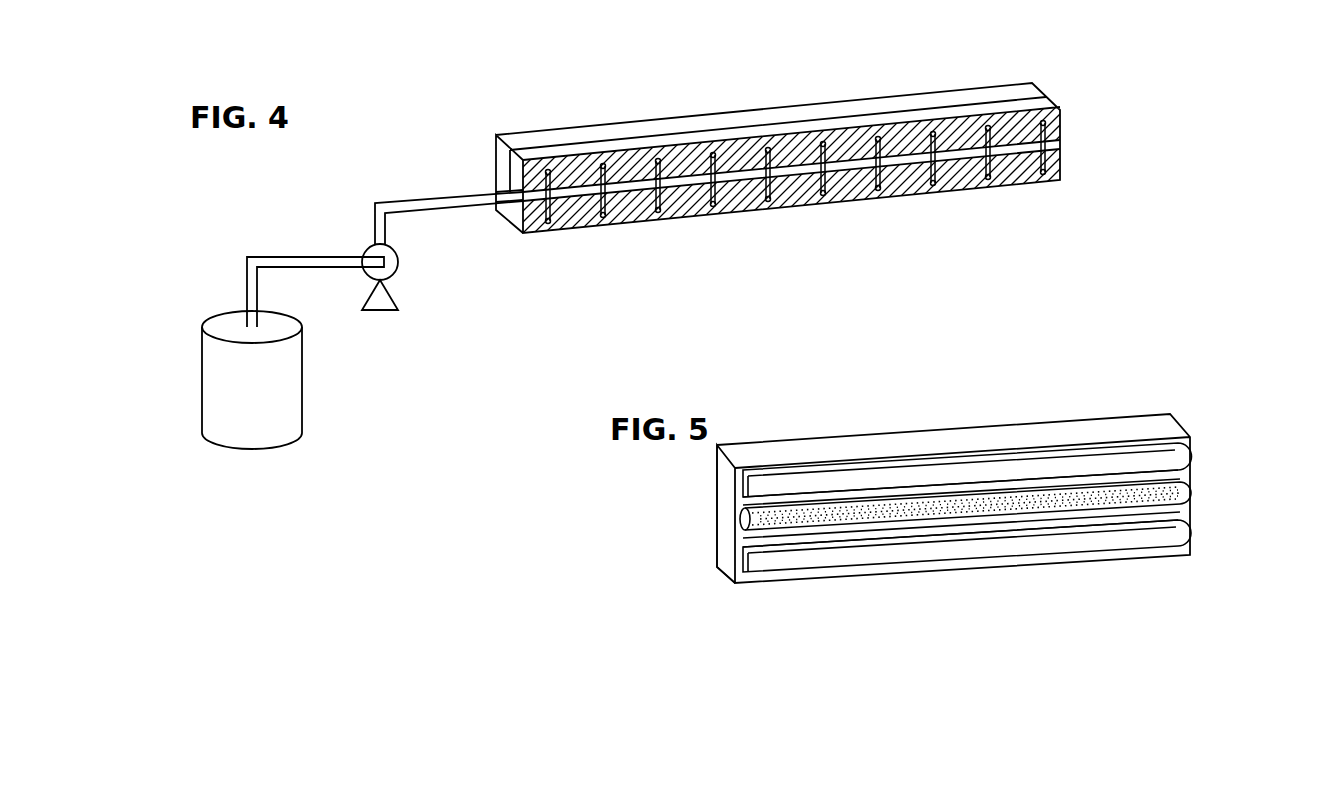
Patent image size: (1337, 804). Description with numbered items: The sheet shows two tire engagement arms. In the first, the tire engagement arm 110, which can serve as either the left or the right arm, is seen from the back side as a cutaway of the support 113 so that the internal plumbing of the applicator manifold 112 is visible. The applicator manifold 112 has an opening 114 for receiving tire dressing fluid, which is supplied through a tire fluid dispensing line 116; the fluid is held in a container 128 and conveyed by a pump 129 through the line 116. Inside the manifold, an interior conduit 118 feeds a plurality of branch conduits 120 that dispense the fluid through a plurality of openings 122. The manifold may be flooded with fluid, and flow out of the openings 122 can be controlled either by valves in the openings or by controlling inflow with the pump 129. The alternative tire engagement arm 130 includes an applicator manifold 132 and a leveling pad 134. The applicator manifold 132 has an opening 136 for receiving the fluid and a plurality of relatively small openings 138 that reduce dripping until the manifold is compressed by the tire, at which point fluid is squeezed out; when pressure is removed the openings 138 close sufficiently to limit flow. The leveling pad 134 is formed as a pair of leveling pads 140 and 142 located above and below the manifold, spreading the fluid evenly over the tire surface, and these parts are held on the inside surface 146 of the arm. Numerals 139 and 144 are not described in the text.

In FIG. 4, the tire engagement arm 110 is at (1108, 82).
In FIG. 4, the applicator manifold 112 is at (753, 143).
In FIG. 4, the support 113 is at (1003, 90).
In FIG. 4, the opening 114 is at (523, 212).
In FIG. 4, the tire fluid dispensing line 116 is at (466, 200).
In FIG. 4, the interior conduit 118 is at (838, 163).
In FIG. 4, the branch conduits 120 is at (950, 127).
In FIG. 4, the openings 122 is at (712, 150).
In FIG. 4, the container 128 is at (285, 410).
In FIG. 4, the pump 129 is at (390, 277).
In FIG. 5, the tire engagement arm 130 is at (1215, 401).
In FIG. 5, the applicator manifold 132 is at (1185, 495).
In FIG. 5, the leveling pad 134 is at (1172, 460).
In FIG. 5, the opening 136 is at (738, 523).
In FIG. 5, the openings 138 is at (1057, 498).
In FIG. 5, the end portion of wick 139 is at (787, 513).
In FIG. 5, the leveling pad 140 is at (1100, 460).
In FIG. 5, the leveling pad 142 is at (1132, 543).
In FIG. 5, the top wall 144 is at (905, 443).
In FIG. 5, the inside surface 146 is at (762, 603).